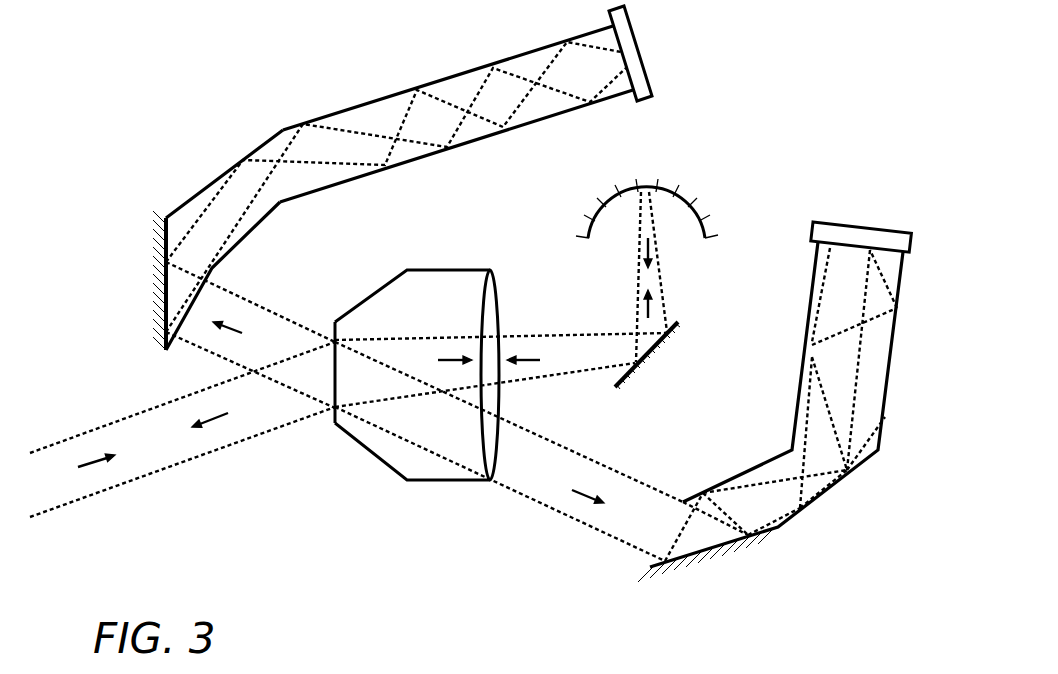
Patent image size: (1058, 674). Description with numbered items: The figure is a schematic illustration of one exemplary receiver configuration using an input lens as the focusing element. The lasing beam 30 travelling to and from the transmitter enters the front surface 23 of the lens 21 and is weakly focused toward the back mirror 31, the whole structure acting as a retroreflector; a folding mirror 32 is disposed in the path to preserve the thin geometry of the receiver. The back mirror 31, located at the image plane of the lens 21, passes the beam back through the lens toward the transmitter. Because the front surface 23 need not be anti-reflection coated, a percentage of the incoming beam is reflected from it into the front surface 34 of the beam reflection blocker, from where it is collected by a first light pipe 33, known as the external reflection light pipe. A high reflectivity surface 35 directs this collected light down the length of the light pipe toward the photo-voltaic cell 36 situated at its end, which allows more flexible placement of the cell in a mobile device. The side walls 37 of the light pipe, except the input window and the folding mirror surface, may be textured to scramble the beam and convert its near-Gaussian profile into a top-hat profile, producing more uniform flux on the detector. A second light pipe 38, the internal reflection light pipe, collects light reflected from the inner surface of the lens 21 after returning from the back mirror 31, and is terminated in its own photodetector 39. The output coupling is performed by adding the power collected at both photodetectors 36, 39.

The lens 21 is at (397, 403).
The front surface of the lens 23 is at (335, 412).
The lasing beam 30 is at (67, 494).
The back mirror 31 is at (673, 193).
The folding mirror 32 is at (680, 325).
The first light pipe 33 is at (399, 183).
The front surface of the beam reflection blocker 34 is at (205, 296).
The high reflectivity surface 35 is at (165, 282).
The photo-voltaic cell 36 is at (643, 47).
The side walls of the light pipe 37 is at (443, 78).
The second light pipe 38 is at (828, 490).
The photodetector 39 is at (888, 222).